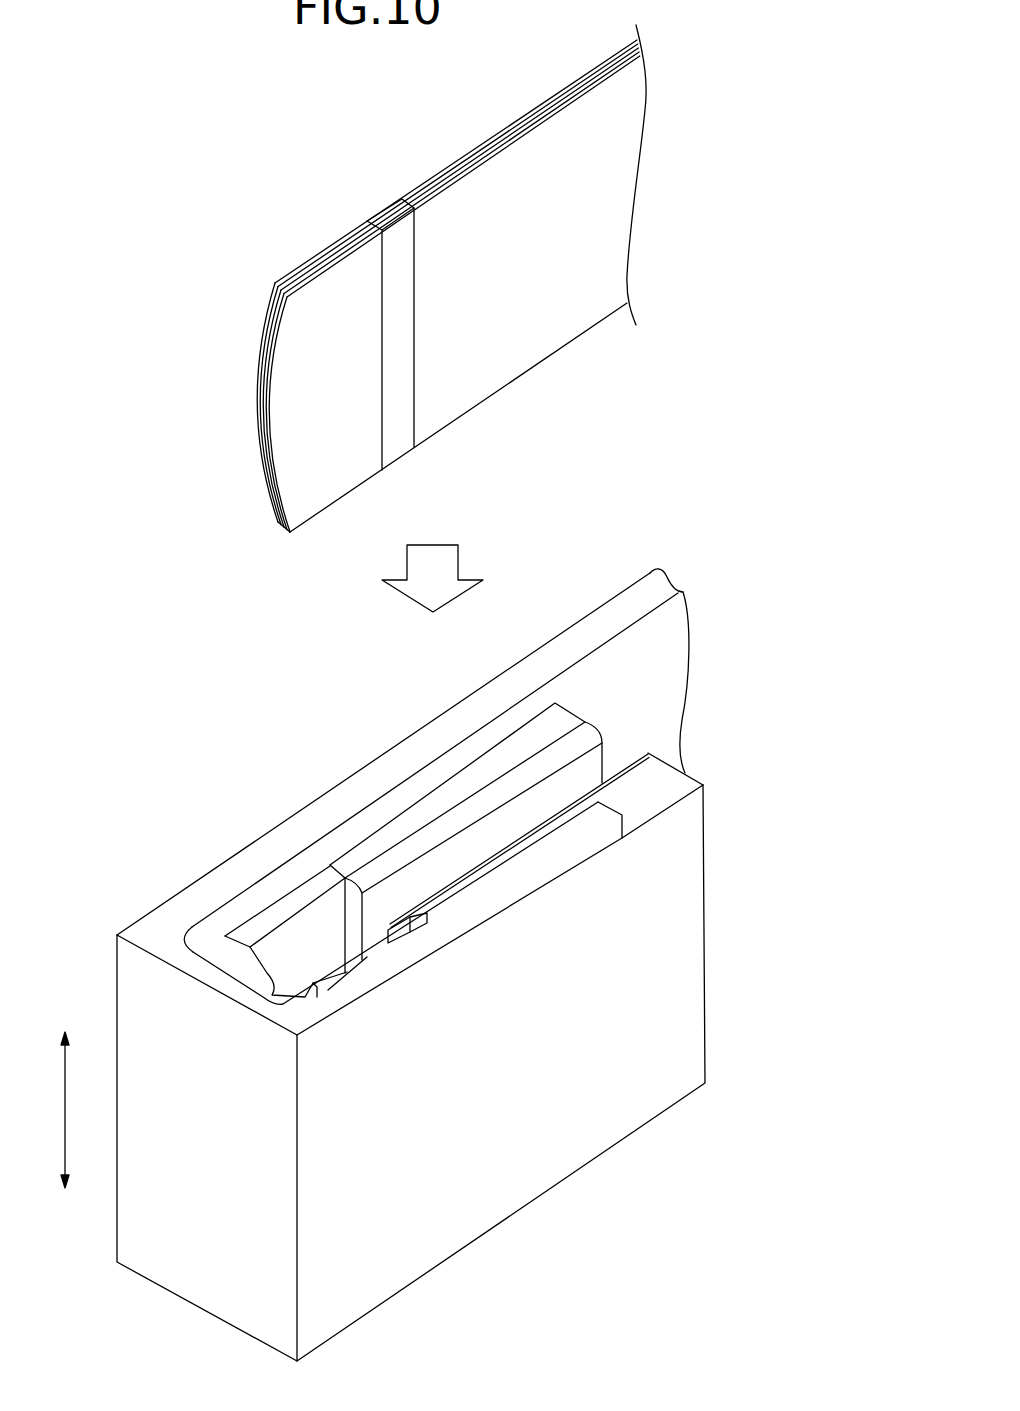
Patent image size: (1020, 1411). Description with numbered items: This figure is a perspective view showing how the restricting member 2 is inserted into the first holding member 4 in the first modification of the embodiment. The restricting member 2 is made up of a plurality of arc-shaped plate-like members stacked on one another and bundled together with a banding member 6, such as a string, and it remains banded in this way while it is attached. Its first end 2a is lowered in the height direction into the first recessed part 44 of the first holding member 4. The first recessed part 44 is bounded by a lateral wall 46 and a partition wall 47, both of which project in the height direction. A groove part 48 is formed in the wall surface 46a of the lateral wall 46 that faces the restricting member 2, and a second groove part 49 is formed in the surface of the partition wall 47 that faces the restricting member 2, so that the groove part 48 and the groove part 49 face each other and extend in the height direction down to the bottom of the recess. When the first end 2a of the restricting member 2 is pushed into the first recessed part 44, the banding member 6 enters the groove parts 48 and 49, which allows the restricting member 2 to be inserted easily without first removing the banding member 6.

The restricting member 2 is at (457, 123).
The first end 2a is at (297, 267).
The banding member 6 is at (383, 217).
The first holding member 4 is at (208, 812).
The first recessed part 44 is at (416, 886).
The lateral wall 46 is at (455, 732).
The wall surface 46a is at (383, 917).
The partition wall 47 is at (552, 853).
The groove part 48 is at (300, 960).
The groove part 49 is at (375, 952).